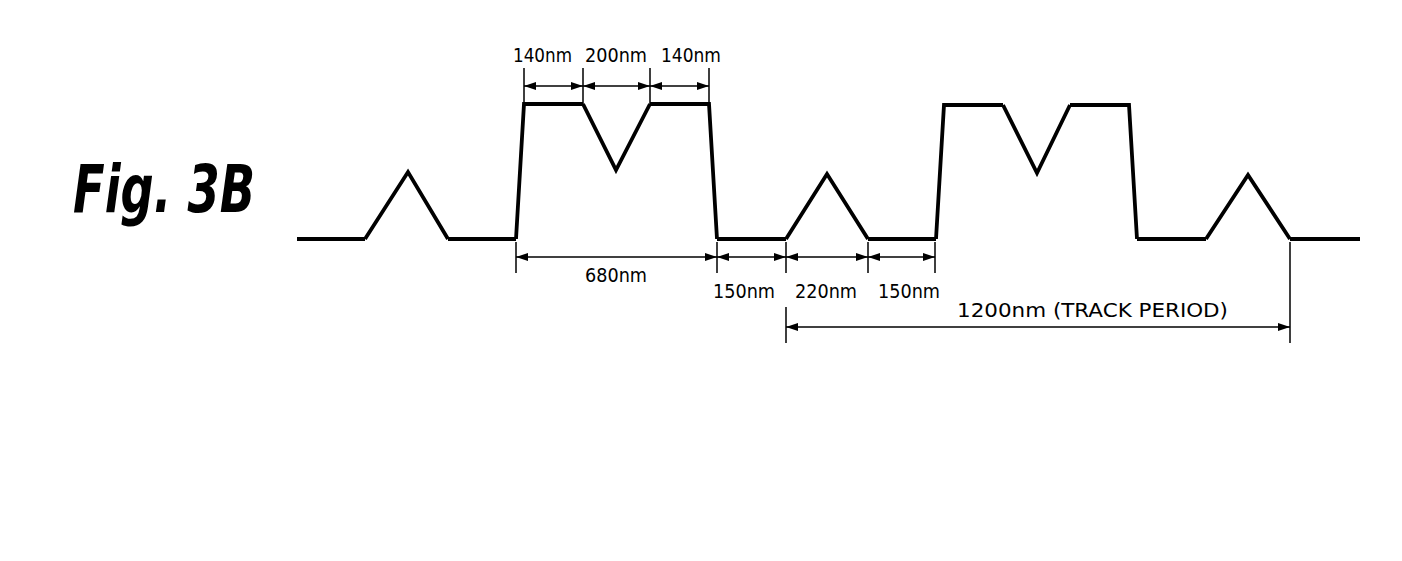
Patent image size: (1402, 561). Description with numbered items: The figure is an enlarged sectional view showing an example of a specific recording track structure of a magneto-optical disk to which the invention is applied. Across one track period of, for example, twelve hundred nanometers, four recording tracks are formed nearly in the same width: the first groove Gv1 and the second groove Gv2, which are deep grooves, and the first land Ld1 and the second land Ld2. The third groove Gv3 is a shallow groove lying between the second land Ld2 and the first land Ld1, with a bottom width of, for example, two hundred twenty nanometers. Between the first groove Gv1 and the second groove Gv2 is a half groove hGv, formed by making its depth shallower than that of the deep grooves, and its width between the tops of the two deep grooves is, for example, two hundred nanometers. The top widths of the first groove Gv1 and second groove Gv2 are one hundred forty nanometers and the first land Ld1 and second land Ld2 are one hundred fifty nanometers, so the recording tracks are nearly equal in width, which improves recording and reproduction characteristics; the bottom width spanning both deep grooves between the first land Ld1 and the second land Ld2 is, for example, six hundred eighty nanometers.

The second land Ld2 is at (334, 238).
The first land Ld1 is at (482, 238).
The third groove Gv3 is at (391, 197).
The first groove Gv1 is at (549, 106).
The second groove Gv2 is at (680, 106).
The half groove hGv is at (600, 148).